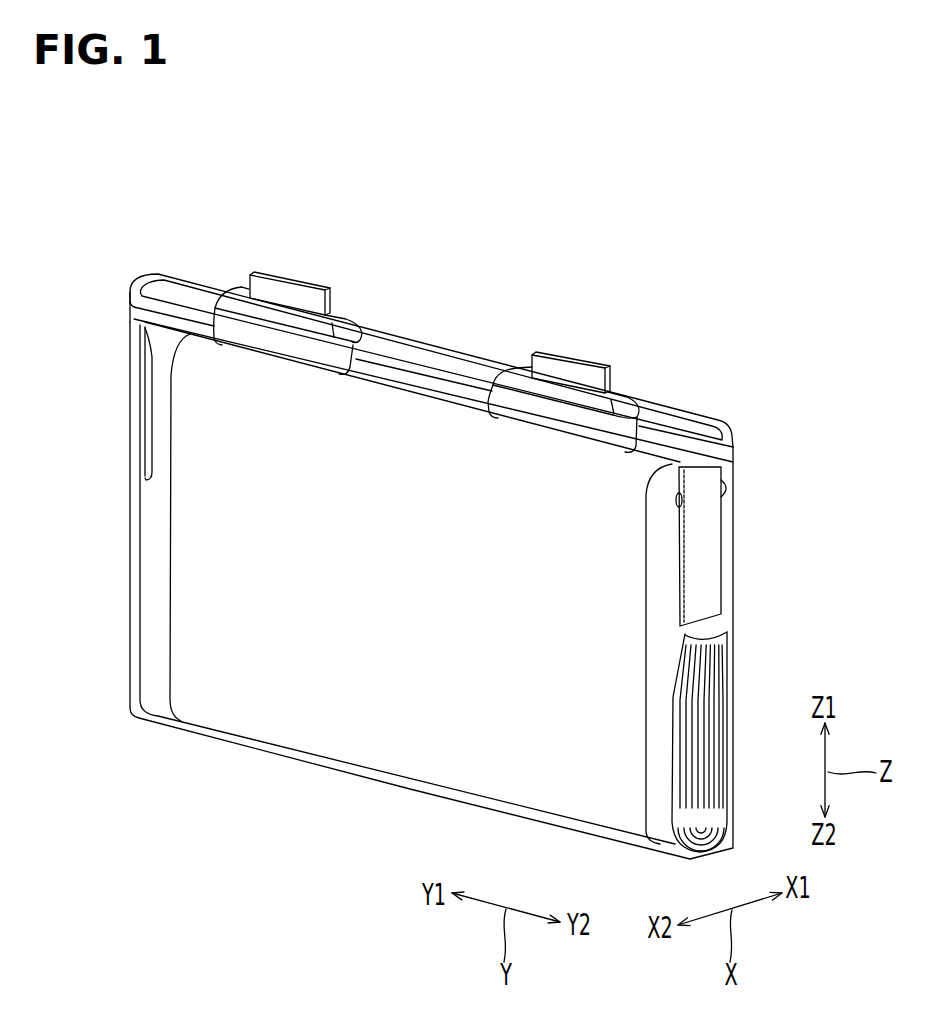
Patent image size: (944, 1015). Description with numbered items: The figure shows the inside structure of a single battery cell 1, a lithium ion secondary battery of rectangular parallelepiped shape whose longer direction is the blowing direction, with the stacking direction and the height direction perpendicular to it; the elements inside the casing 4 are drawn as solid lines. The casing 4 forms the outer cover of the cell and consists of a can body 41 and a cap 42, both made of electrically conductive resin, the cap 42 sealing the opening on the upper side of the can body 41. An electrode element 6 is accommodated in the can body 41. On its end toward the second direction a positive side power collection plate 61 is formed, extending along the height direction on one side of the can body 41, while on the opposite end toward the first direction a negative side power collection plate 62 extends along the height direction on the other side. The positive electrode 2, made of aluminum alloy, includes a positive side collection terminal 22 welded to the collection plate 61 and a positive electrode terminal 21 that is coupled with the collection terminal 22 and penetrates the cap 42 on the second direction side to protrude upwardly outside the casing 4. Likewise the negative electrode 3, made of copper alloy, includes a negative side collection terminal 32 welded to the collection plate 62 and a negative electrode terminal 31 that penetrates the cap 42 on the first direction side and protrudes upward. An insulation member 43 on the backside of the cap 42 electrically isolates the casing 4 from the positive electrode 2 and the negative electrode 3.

The battery cell 1 is at (468, 345).
The positive electrode 2 is at (575, 367).
The positive electrode terminal 21 is at (595, 363).
The positive side collection terminal 22 is at (710, 535).
The negative electrode 3 is at (296, 289).
The negative electrode terminal 31 is at (308, 284).
The negative side collection terminal 32 is at (147, 463).
The casing 4 is at (419, 345).
The can body 41 is at (129, 402).
The cap 42 is at (188, 289).
The insulation member 43 is at (712, 458).
The electrode element 6 is at (417, 590).
The positive side power collection plate 61 is at (665, 630).
The negative side power collection plate 62 is at (151, 622).